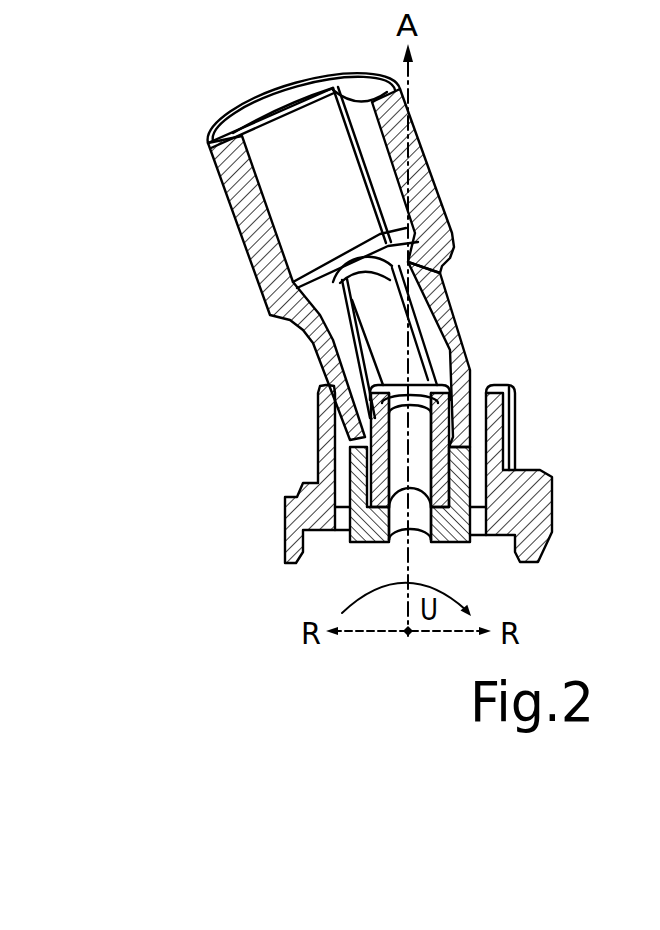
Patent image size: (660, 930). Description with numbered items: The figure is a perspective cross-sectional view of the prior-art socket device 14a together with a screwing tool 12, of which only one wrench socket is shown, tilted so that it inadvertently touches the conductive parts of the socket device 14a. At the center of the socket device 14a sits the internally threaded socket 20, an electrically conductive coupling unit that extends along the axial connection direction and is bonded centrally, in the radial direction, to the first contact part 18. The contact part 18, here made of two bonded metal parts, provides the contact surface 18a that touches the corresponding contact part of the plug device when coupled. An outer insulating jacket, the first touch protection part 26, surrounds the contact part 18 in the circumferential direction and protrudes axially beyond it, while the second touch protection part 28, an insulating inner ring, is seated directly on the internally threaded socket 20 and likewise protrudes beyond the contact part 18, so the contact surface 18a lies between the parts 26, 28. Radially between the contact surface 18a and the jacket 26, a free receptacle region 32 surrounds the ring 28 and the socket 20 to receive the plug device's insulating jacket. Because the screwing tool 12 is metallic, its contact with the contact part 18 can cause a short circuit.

The screwing tool 12 is at (222, 107).
The socket device 14a is at (522, 385).
The first contact part 18 is at (348, 468).
The contact surface 18a is at (456, 432).
The internally threaded socket 20 is at (462, 520).
The first touch protection part 26 is at (505, 451).
The second touch protection part 28 is at (447, 393).
The receptacle region 32 is at (310, 484).